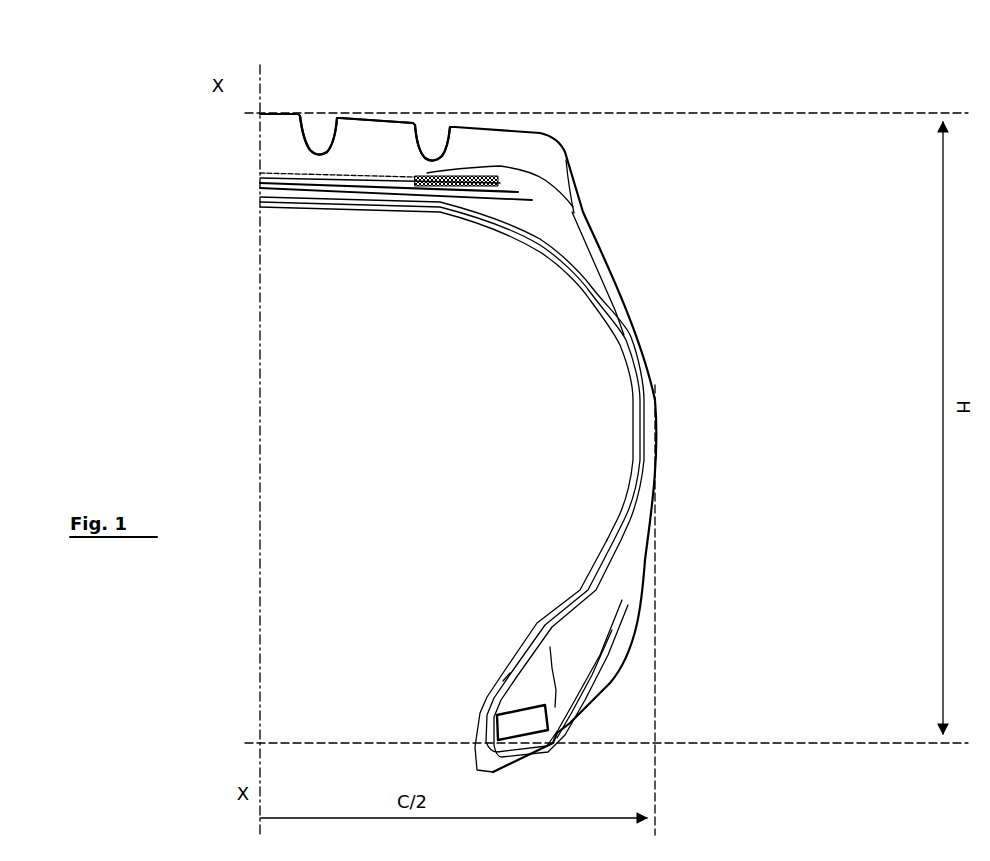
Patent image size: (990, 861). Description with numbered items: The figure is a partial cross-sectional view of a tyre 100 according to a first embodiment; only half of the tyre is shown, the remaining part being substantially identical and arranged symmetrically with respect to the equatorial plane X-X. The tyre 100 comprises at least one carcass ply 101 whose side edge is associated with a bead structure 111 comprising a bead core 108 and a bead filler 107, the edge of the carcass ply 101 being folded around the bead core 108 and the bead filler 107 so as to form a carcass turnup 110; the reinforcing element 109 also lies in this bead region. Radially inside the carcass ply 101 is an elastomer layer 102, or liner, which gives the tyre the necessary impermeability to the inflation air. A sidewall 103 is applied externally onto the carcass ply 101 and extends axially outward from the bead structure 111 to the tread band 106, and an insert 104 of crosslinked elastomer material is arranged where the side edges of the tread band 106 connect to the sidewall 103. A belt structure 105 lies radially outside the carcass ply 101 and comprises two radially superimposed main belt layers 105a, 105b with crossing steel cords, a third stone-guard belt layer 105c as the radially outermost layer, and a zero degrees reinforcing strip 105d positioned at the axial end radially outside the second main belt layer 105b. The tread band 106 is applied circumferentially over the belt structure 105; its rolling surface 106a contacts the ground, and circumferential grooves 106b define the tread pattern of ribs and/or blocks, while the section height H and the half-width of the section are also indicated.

The tyre 100 is at (603, 137).
The carcass ply 101 is at (617, 343).
The elastomer layer 102 is at (632, 430).
The sidewall 103 is at (648, 392).
The insert 104 is at (563, 220).
The belt structure 105 is at (250, 190).
The first main belt layer 105a is at (262, 212).
The second main belt layer 105b is at (365, 187).
The third belt layer 105c is at (270, 175).
The zero degrees reinforcing strip 105d is at (446, 185).
The tread band 106 is at (507, 157).
The rolling surface 106a is at (483, 127).
The circumferential grooves 106b is at (315, 130).
The bead filler 107 is at (595, 617).
The bead core 108 is at (508, 732).
The ply turn-up 109 is at (605, 660).
The carcass turnup 110 is at (577, 687).
The bead structure 111 is at (473, 698).